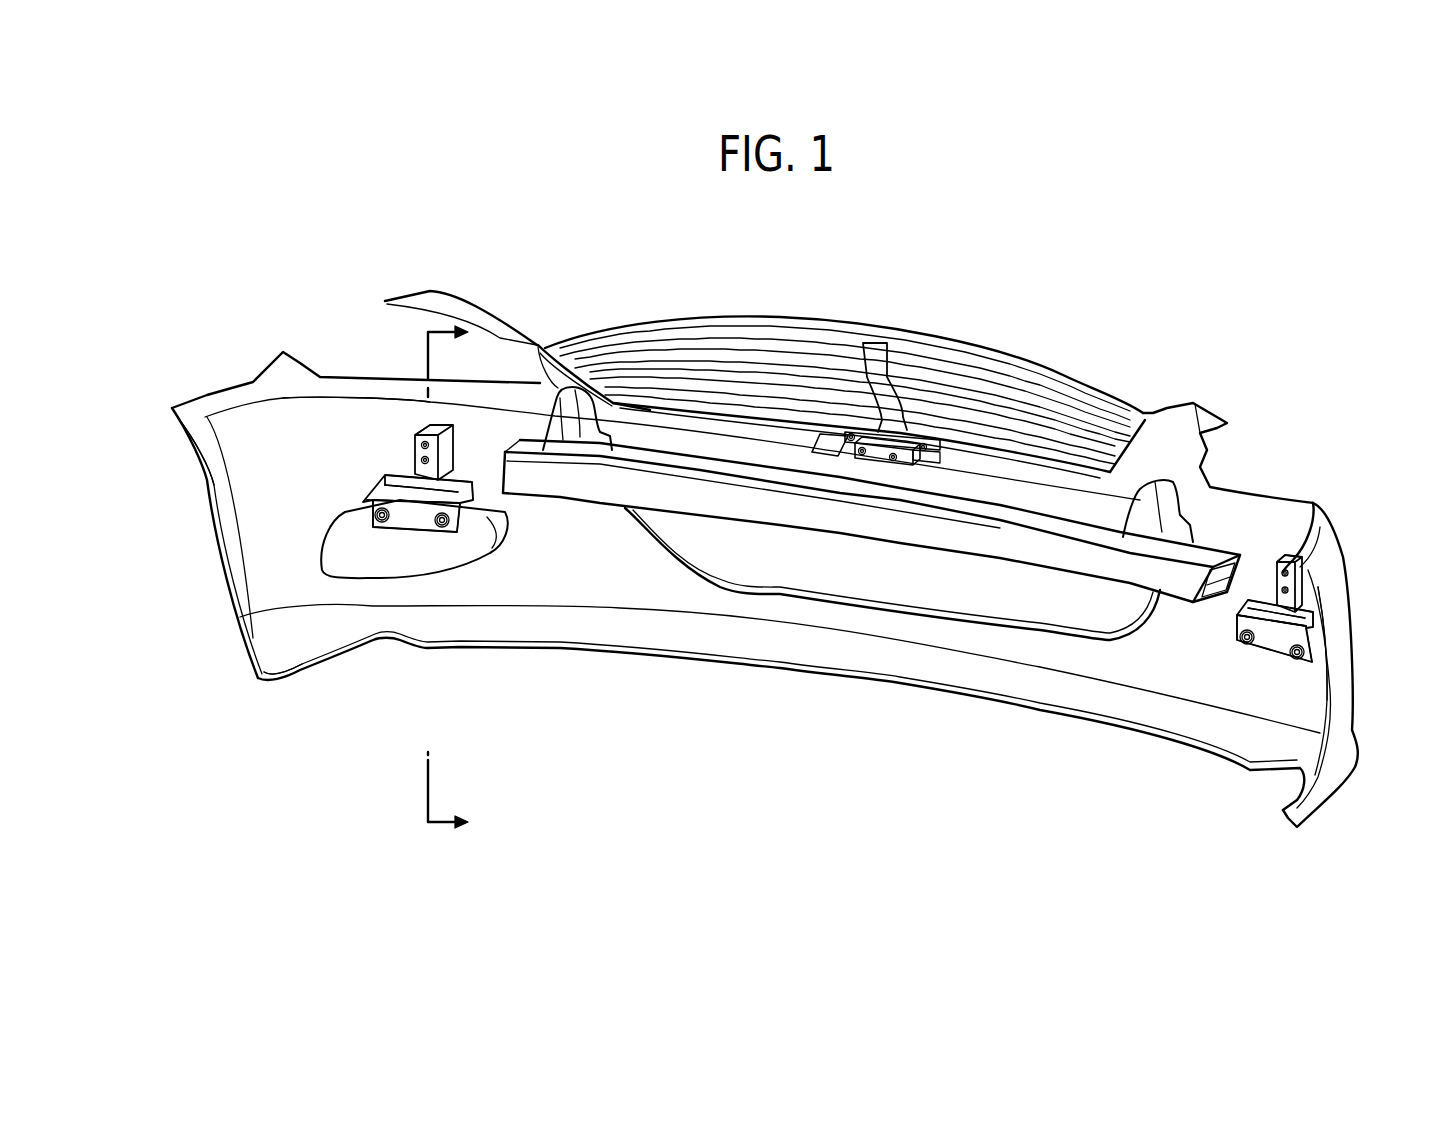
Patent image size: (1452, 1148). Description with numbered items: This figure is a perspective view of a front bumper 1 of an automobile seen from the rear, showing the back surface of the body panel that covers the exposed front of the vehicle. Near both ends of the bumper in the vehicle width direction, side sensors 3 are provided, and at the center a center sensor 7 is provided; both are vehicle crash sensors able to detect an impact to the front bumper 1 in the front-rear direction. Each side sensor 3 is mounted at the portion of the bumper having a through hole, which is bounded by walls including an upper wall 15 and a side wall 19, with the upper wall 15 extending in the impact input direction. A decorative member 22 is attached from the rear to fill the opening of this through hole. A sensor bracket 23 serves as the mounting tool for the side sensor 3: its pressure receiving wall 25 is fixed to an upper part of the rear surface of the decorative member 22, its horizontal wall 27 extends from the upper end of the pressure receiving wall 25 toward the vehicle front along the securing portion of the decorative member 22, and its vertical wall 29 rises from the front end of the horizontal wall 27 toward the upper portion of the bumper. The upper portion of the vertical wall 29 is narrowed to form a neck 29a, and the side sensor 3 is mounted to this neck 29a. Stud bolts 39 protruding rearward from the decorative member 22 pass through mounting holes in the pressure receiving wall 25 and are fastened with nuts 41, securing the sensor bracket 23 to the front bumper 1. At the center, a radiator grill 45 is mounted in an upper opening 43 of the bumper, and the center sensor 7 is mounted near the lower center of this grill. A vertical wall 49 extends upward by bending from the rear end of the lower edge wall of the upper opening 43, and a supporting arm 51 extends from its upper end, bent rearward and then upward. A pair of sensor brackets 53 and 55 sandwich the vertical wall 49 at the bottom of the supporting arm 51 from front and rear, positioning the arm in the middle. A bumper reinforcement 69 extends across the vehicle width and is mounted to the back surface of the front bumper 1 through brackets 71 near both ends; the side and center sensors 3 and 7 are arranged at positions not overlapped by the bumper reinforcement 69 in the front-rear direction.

The front bumper 1 is at (797, 673).
The side sensors 3 is at (432, 425).
The center sensor 7 is at (878, 452).
The upper wall 15 is at (488, 492).
The side wall 19 is at (500, 538).
The decorative member 22 is at (380, 560).
The sensor bracket 23 is at (407, 533).
The pressure receiving wall 25 is at (425, 520).
The horizontal wall 27 is at (370, 498).
The vertical wall 29 is at (458, 492).
The neck 29a is at (413, 475).
The stud bolts 39 is at (378, 515).
The nuts 41 is at (378, 524).
The upper opening 43 is at (583, 357).
The radiator grill 45 is at (970, 373).
The vertical wall 49 is at (773, 430).
The supporting arm 51 is at (872, 353).
The sensor bracket 53 is at (867, 427).
The sensor bracket 55 is at (930, 453).
The bumper reinforcement 69 is at (983, 540).
The brackets 71 is at (558, 400).